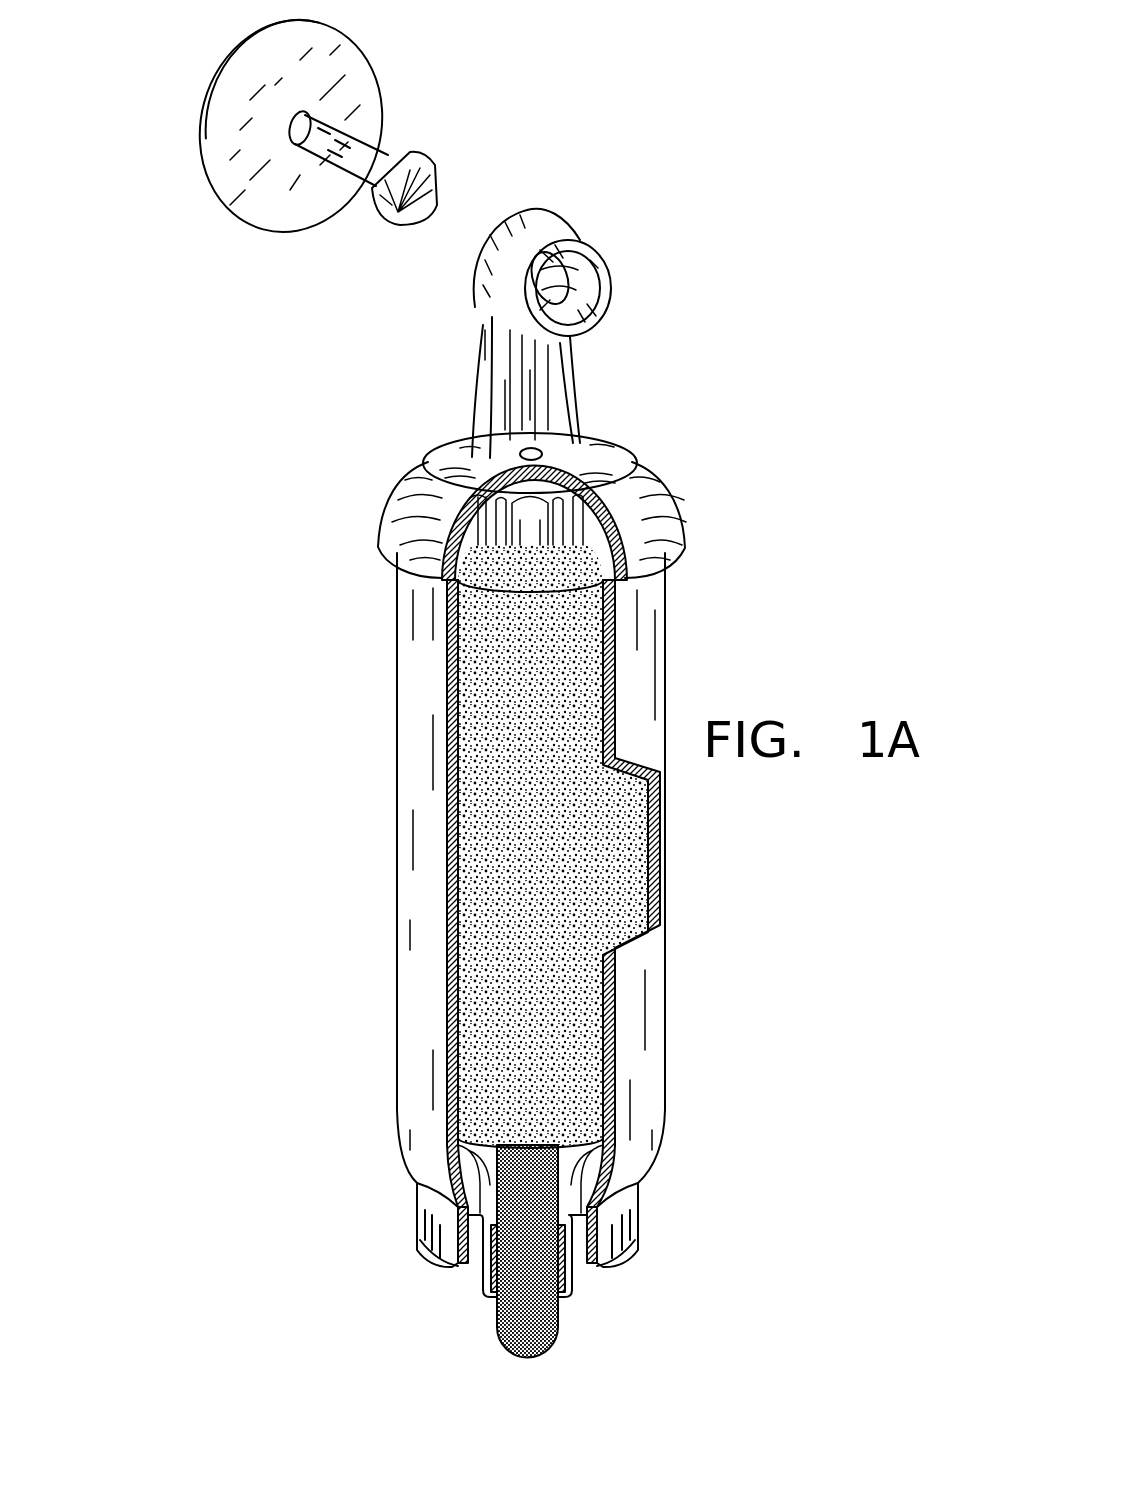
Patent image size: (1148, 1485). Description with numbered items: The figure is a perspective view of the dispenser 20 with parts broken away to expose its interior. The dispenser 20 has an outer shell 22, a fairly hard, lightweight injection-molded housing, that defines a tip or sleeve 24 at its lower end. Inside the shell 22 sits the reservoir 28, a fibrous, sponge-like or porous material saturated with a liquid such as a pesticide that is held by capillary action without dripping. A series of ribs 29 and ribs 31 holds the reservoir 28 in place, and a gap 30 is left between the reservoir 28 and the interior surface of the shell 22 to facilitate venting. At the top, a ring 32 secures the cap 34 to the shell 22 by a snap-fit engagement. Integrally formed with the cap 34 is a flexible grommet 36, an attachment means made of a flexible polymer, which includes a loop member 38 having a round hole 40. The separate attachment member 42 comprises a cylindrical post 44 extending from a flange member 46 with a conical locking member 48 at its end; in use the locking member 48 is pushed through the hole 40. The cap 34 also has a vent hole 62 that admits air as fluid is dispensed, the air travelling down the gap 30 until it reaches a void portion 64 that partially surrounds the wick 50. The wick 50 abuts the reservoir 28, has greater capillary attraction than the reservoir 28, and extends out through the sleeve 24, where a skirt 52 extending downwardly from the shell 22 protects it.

The dispenser 20 is at (262, 596).
The outer shell 22 is at (411, 770).
The tip or sleeve 24 is at (485, 1280).
The reservoir 28 is at (486, 845).
The ribs 29 is at (514, 545).
The gap 30 is at (662, 850).
The ribs 31 is at (417, 1185).
The ring 32 is at (672, 523).
The cap 34 is at (621, 452).
The flexible grommet 36 is at (615, 373).
The loop member 38 is at (612, 285).
The round hole 40 is at (590, 265).
The attachment member 42 is at (410, 40).
The cylindrical post 44 is at (380, 140).
The flange member 46 is at (227, 187).
The conical locking member 48 is at (433, 182).
The wick 50 is at (555, 1343).
The skirt 52 is at (438, 1238).
The vent hole 62 is at (518, 454).
The void portion 64 is at (615, 1258).